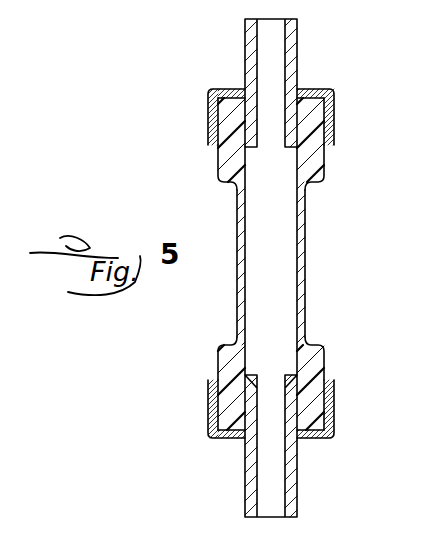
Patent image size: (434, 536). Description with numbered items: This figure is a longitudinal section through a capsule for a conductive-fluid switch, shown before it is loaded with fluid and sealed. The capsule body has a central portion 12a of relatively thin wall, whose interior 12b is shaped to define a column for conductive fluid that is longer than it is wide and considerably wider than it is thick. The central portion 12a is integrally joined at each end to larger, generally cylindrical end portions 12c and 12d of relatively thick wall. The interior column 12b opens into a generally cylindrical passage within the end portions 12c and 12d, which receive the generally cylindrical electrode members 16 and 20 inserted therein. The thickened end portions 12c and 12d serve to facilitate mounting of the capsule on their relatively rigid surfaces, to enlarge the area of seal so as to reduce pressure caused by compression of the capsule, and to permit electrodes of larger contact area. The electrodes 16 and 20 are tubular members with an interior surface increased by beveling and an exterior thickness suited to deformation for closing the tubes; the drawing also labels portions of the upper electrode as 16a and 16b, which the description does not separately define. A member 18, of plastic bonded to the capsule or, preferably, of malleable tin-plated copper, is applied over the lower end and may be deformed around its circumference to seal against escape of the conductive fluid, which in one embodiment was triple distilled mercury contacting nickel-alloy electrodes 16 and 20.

The central portion 12a is at (305, 282).
The interior column 12b is at (296, 337).
The end portion 12c is at (222, 163).
The end portion 12d is at (222, 348).
The electrode member 16 is at (250, 58).
The tube bore of upper cap 16a is at (273, 64).
The tube wall end of upper cap 16b is at (285, 147).
The member 18 is at (210, 414).
The electrode member 20 is at (247, 470).